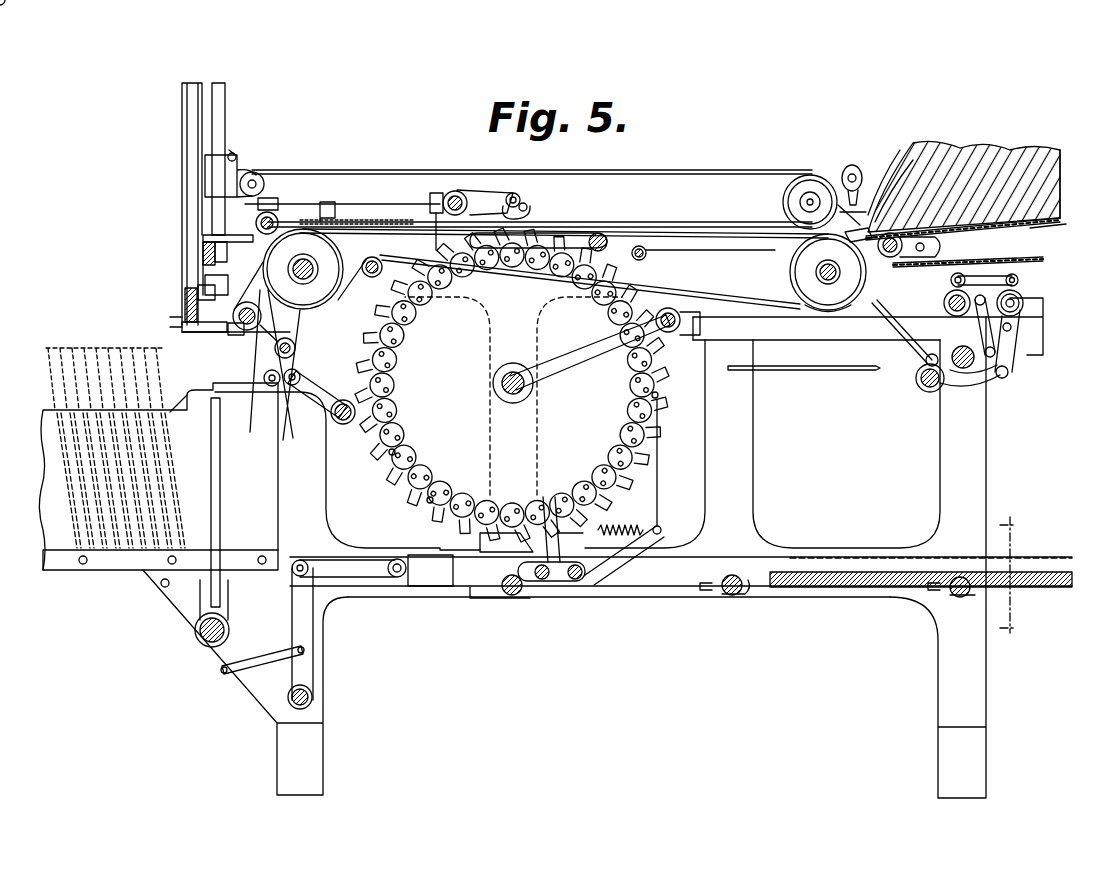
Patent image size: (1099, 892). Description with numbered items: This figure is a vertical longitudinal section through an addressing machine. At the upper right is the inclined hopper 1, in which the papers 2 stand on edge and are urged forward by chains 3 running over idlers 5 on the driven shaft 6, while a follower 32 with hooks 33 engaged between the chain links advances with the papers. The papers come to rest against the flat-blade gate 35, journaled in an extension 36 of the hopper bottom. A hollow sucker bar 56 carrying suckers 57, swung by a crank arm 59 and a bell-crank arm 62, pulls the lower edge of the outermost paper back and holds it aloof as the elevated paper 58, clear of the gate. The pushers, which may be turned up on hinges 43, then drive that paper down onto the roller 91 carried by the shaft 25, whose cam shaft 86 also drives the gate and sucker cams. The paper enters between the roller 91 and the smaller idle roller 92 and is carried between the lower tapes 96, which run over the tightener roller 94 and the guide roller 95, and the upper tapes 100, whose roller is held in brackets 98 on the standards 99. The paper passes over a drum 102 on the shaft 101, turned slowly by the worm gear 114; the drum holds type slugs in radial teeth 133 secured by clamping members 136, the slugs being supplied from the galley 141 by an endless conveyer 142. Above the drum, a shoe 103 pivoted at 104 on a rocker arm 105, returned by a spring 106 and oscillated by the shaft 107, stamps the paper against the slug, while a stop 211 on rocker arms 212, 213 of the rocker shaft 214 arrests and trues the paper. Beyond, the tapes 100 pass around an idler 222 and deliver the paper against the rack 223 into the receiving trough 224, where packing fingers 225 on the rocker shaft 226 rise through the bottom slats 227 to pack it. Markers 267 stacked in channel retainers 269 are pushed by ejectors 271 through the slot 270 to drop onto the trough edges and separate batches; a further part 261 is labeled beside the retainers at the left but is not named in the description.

The hopper 1 is at (1054, 218).
The papers 2 is at (943, 162).
The chains 3 is at (997, 260).
The idlers 5 is at (901, 257).
The driven shaft 6 is at (891, 258).
The shaft 25 is at (820, 310).
The follower 32 is at (1040, 180).
The hooks or lugs 33 is at (1034, 206).
The gate 35 is at (858, 225).
The extension 36 is at (833, 258).
The hinges 43 is at (295, 335).
The sucker bar 56 is at (852, 165).
The suckers 57 is at (848, 175).
The elevated paper 58 is at (848, 232).
The crank arm 59 is at (868, 175).
The additional arm 62 is at (895, 157).
The shaft 86 is at (955, 318).
The roller 91 is at (792, 266).
The idle roller 92 is at (785, 200).
The tightener roller 94 is at (291, 392).
The guide roller 95 is at (372, 278).
The tapes 96 is at (536, 283).
The brackets 98 is at (229, 182).
The standards 99 is at (218, 132).
The tapes 100 is at (672, 177).
The shaft 101 is at (495, 387).
The drum 102 is at (513, 396).
The shoe 103 is at (532, 214).
The pivot 104 is at (513, 193).
The rocker arm 105 is at (482, 192).
The spring 106 is at (528, 205).
The shaft 107 is at (454, 191).
The worm gear 114 is at (288, 268).
The radial teeth 133 is at (385, 447).
The clamping members 136 is at (422, 503).
The galley 141 is at (1043, 342).
The endless conveyer 142 is at (768, 374).
The gage or stop 211 is at (333, 206).
The rocker arm 212 is at (184, 329).
The rocker arm 213 is at (300, 214).
The rocker shaft 214 is at (283, 203).
The idler 222 is at (265, 372).
The rack 223 is at (252, 430).
The receiving trough 224 is at (48, 500).
The packing fingers 225 is at (221, 503).
The rocker shaft 226 is at (198, 643).
The slats 227 is at (118, 566).
The block 261 is at (198, 292).
The markers 267 is at (182, 407).
The retainers 269 is at (182, 205).
The slot 270 is at (238, 335).
The ejectors 271 is at (233, 317).